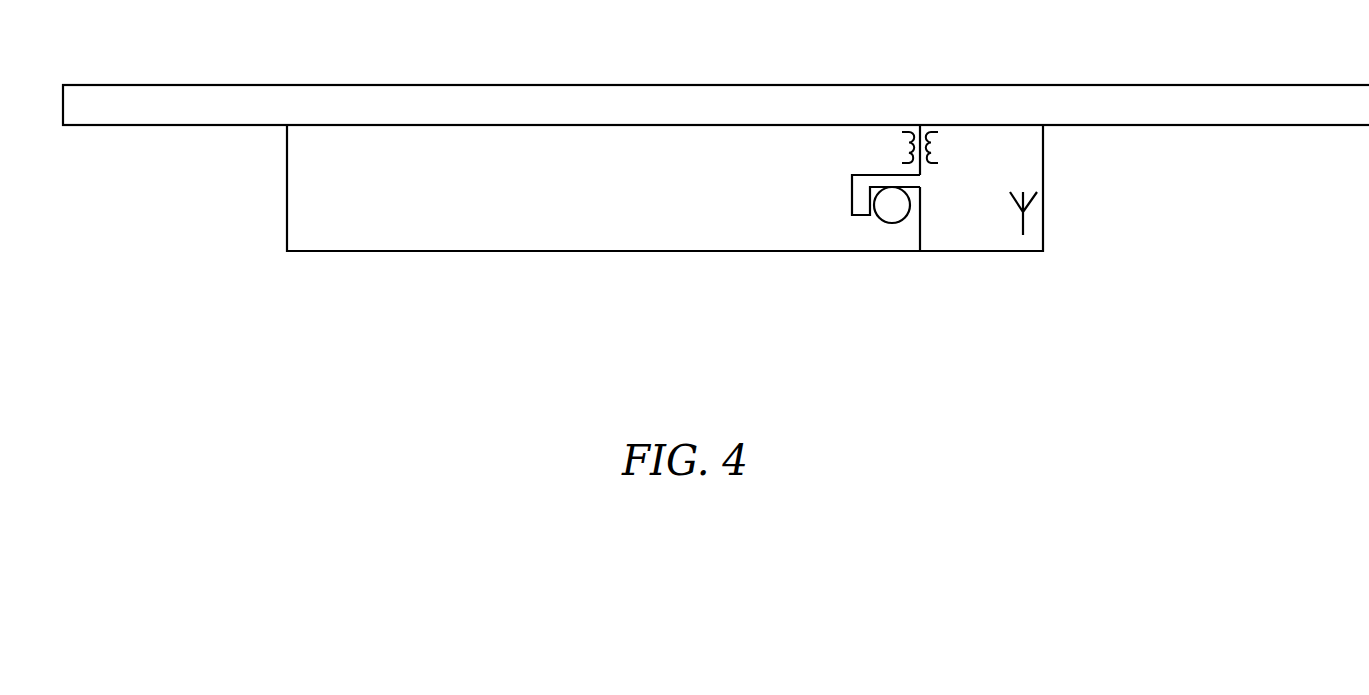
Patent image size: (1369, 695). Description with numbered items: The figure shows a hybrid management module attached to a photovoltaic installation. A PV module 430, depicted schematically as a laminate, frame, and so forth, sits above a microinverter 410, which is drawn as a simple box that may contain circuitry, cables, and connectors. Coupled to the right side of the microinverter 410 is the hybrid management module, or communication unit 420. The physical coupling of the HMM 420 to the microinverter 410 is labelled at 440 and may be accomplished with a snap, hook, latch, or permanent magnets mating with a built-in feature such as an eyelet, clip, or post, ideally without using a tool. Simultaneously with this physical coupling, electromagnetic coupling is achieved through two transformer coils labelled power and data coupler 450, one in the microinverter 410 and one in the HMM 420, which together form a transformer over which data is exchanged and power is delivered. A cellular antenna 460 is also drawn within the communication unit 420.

The microinverter 410 is at (337, 252).
The hybrid management module (HMM) 420 is at (1008, 325).
The PV module 430 is at (945, 85).
The coupling of the HMM to the microinverter 440 is at (873, 222).
The power and data coupler 450 is at (938, 147).
The cellular antenna 460 is at (1032, 215).